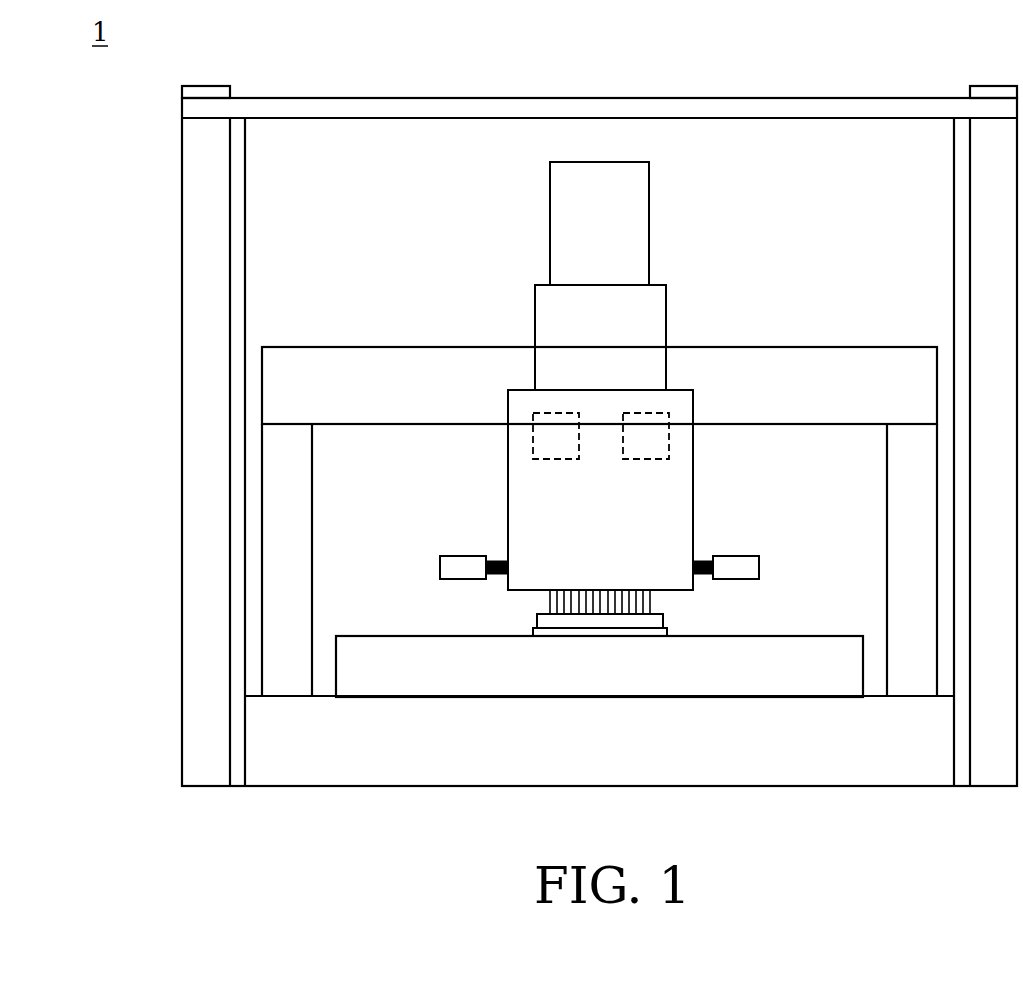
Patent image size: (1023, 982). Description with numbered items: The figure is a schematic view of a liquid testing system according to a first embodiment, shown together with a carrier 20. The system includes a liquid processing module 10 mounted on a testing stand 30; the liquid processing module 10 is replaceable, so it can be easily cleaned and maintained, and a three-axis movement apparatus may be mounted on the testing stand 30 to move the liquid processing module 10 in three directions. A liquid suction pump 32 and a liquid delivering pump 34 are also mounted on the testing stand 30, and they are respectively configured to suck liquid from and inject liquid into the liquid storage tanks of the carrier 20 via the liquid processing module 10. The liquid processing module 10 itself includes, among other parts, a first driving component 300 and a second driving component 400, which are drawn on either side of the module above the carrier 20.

The liquid processing module 10 is at (545, 601).
The carrier 20 is at (665, 621).
The testing stand 30 is at (680, 332).
The liquid suction pump 32 is at (670, 444).
The liquid delivering pump 34 is at (530, 443).
The first driving component 300 is at (440, 566).
The second driving component 400 is at (760, 566).